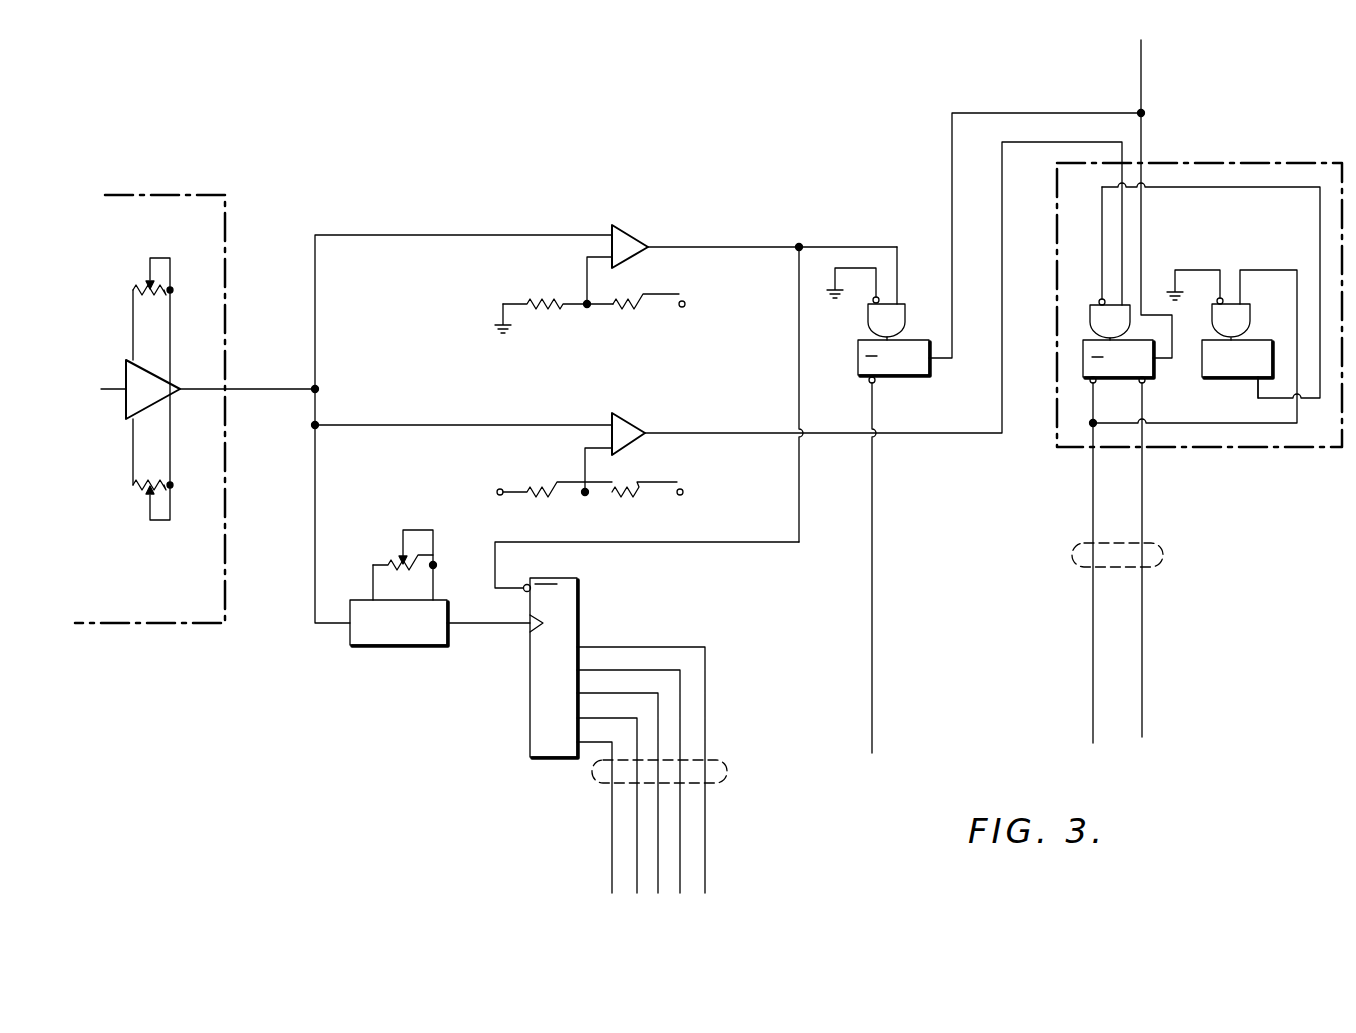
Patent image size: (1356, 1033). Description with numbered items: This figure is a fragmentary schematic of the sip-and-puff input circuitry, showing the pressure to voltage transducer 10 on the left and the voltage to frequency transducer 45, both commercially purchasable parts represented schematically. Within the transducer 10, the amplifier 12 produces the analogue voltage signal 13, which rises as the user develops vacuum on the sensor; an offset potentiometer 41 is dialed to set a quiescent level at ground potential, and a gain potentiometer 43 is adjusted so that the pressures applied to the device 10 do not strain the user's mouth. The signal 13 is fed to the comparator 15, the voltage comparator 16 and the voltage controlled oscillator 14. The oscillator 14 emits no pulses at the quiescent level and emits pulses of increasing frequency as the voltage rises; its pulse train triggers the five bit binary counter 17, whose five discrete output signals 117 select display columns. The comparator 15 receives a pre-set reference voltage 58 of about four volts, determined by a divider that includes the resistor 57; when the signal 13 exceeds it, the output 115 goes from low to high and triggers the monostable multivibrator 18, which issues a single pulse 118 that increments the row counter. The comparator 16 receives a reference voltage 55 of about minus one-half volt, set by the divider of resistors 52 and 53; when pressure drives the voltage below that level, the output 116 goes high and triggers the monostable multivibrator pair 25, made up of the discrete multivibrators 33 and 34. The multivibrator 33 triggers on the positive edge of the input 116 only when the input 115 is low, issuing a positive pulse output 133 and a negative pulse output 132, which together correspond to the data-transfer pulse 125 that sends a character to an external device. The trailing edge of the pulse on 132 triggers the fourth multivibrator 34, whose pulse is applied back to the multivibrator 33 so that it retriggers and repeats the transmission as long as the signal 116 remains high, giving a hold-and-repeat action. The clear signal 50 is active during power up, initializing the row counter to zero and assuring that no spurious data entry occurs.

The pressure to voltage transducer 10 is at (153, 190).
The amplifier 12 is at (125, 405).
The voltage signal 13 is at (322, 381).
The voltage controlled oscillator 14 is at (418, 646).
The comparator 15 is at (617, 225).
The voltage comparator 16 is at (625, 447).
The five bit binary counter 17 is at (565, 577).
The monostable multivibrator 18 is at (857, 362).
The monostable multivibrator pair 25 is at (1233, 158).
The monostable multivibrator 33 is at (1083, 370).
The fourth monostable multivibrator 34 is at (1200, 368).
The offset potentiometer 41 is at (143, 283).
The gain potentiometer 43 is at (143, 500).
The voltage to frequency transducer 45 is at (392, 558).
The clear signal 50 is at (1143, 70).
The resistor 52 is at (535, 310).
The resistor 53 is at (622, 498).
The reference voltage 55 is at (584, 468).
The resistor 57 is at (620, 310).
The reference voltage 58 is at (585, 263).
The comparator output 115 is at (753, 245).
The comparator output 116 is at (762, 435).
The counter output signals 117 is at (727, 770).
The output pulse 118 is at (872, 563).
The output pulse 125 is at (1160, 548).
The negative pulse output 132 is at (1093, 630).
The positive pulse output 133 is at (1142, 622).